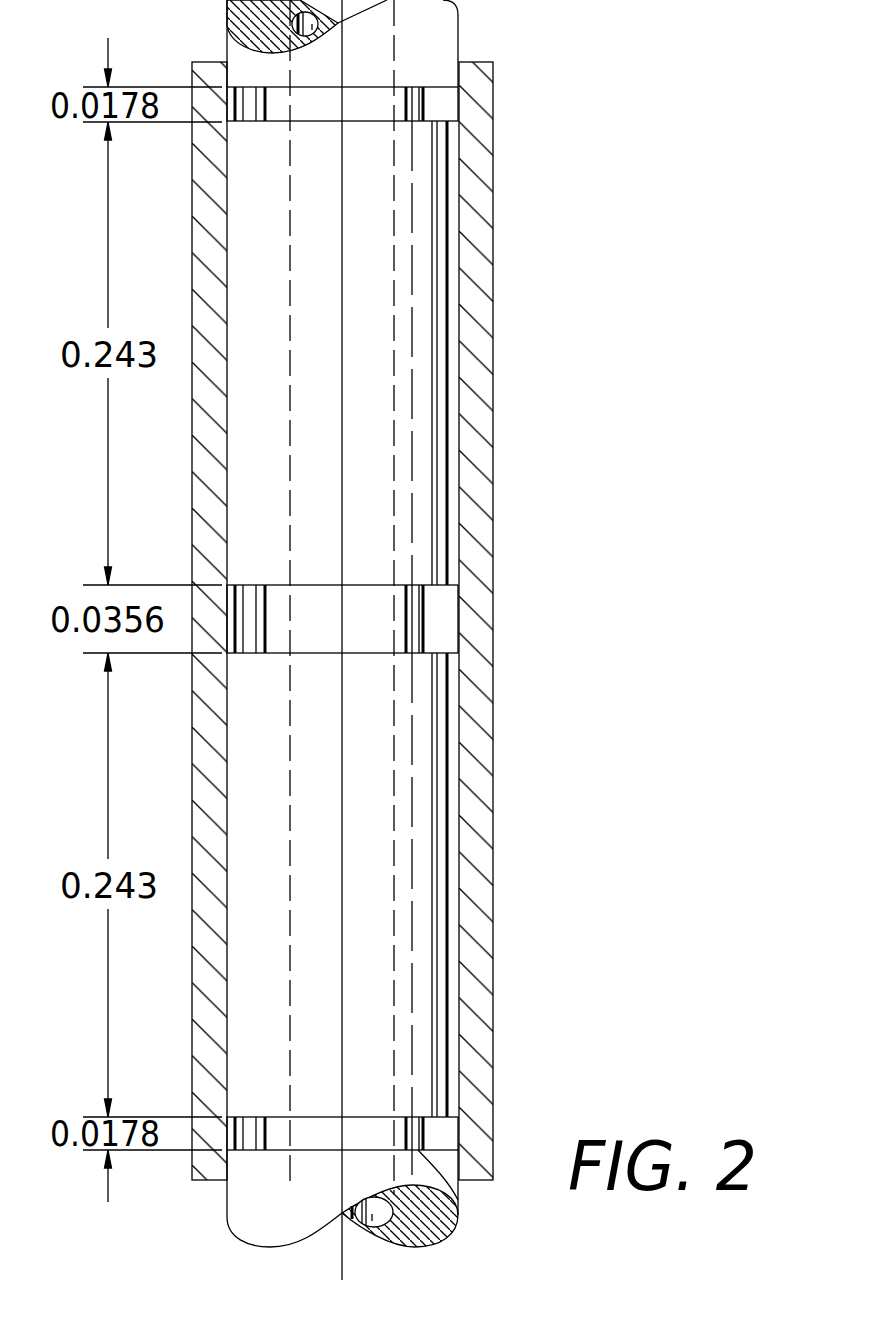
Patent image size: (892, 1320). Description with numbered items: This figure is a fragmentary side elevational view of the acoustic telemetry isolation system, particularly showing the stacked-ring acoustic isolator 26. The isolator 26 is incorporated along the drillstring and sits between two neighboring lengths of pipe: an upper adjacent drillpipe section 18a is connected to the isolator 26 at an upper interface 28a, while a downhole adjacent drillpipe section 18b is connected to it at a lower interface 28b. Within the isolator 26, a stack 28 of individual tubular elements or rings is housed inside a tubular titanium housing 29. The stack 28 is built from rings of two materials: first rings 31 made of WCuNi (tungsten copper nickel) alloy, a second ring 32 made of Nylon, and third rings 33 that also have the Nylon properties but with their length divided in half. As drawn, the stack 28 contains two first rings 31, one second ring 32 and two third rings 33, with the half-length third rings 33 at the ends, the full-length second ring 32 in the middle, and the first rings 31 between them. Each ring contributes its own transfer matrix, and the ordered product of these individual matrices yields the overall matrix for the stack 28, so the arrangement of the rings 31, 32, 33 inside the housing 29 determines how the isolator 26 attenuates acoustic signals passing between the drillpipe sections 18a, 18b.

The stacked-ring acoustic isolator 26 is at (565, 150).
The stack 28 is at (368, 87).
The upper interface 28a is at (417, 87).
The lower interface 28b is at (460, 1190).
The tubular titanium housing 29 is at (494, 62).
The first rings 31 is at (285, 557).
The second ring 32 is at (332, 632).
The third rings 33 is at (332, 115).
The upper adjacent drillpipe section 18a is at (450, 35).
The downhole adjacent drillpipe section 18b is at (287, 1215).